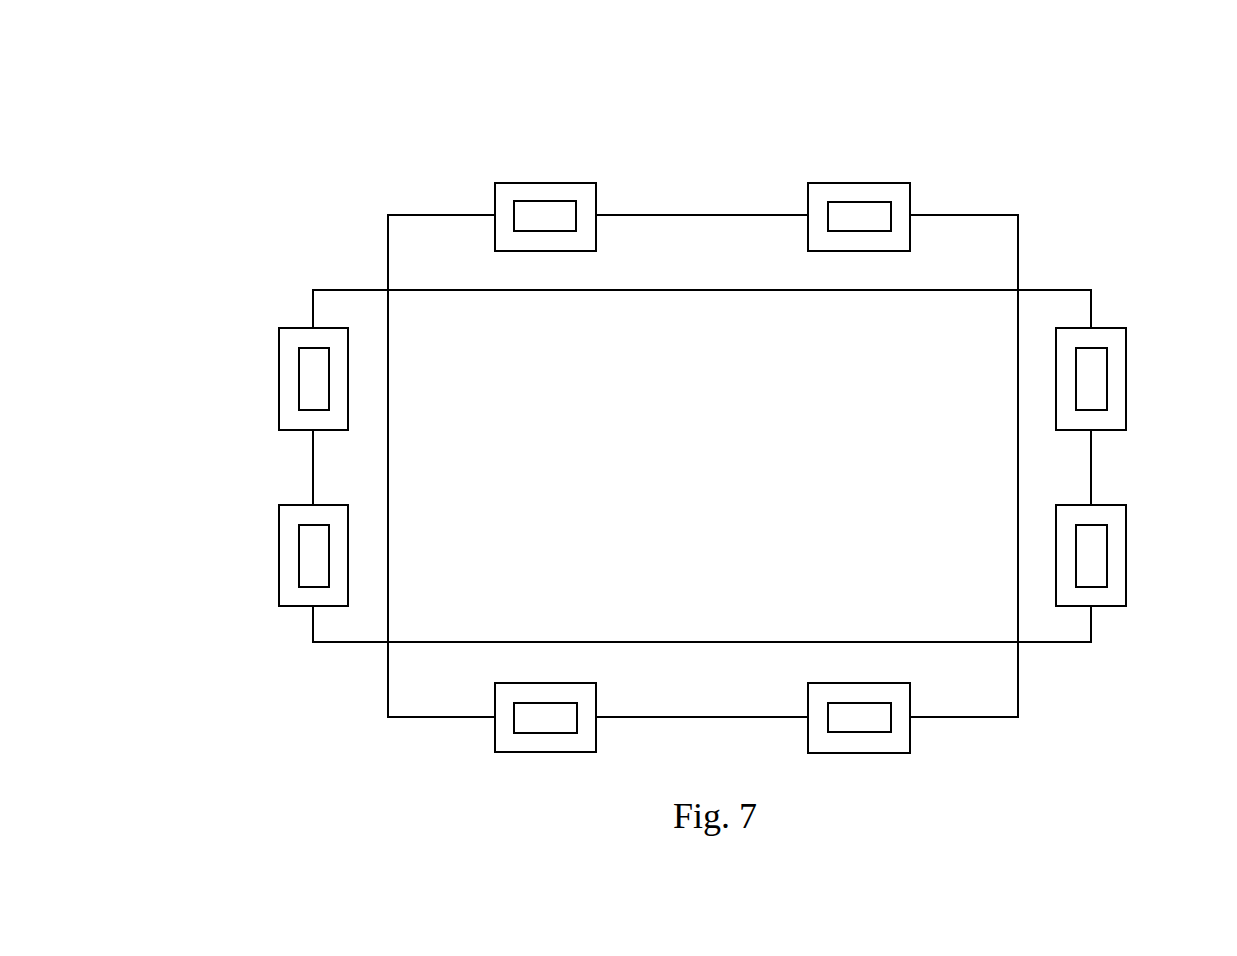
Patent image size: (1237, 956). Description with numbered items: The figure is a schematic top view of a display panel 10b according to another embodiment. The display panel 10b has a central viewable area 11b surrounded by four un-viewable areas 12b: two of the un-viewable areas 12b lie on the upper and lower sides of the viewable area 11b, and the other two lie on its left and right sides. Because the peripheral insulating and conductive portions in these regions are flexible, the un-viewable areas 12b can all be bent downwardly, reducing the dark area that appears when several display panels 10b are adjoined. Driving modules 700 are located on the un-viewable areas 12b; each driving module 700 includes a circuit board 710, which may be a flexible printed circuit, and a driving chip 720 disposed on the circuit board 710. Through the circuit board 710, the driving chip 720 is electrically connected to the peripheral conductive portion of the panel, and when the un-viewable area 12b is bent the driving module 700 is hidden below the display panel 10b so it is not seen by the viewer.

The display panel 10b is at (308, 63).
The viewable area 11b is at (402, 480).
The un-viewable area 12b is at (402, 259).
The driving module 700 is at (537, 160).
The circuit board 710 is at (560, 192).
The driving chip 720 is at (580, 122).